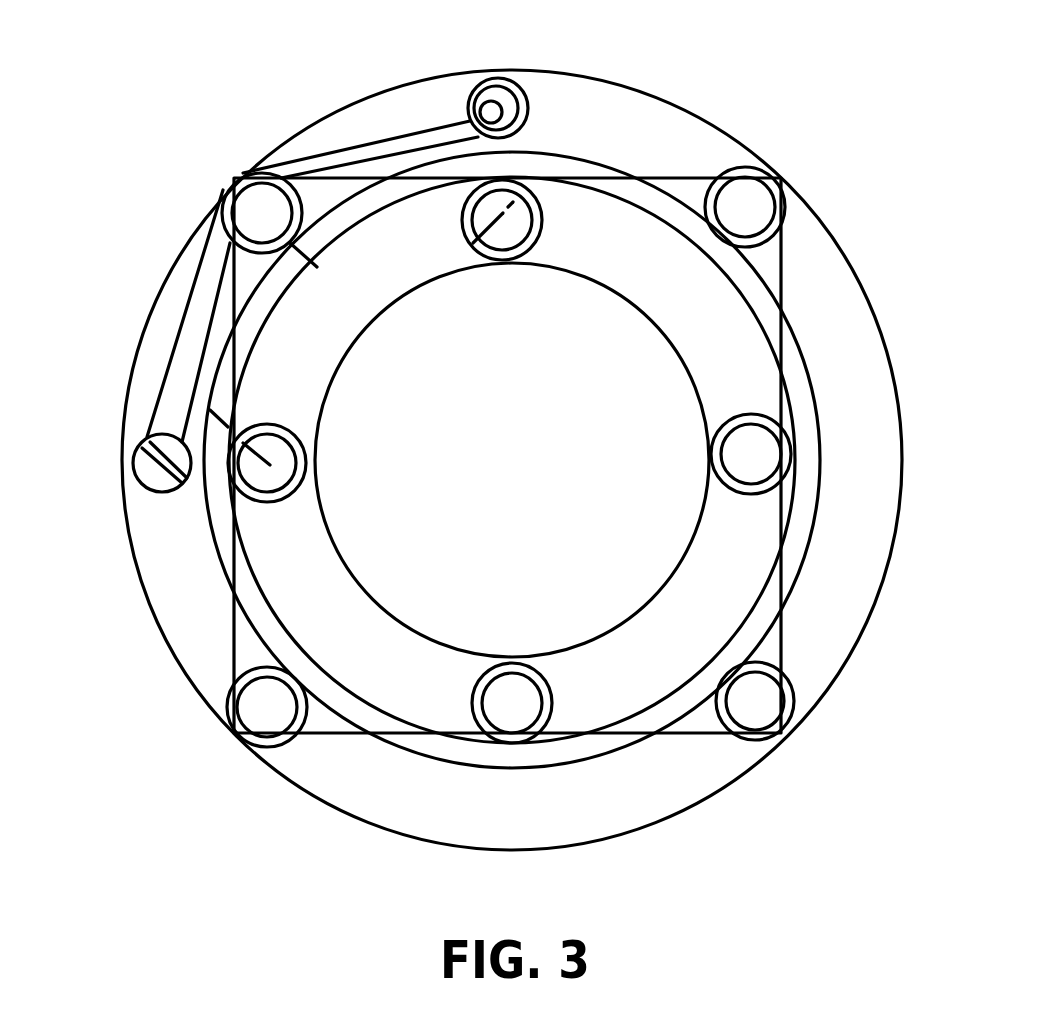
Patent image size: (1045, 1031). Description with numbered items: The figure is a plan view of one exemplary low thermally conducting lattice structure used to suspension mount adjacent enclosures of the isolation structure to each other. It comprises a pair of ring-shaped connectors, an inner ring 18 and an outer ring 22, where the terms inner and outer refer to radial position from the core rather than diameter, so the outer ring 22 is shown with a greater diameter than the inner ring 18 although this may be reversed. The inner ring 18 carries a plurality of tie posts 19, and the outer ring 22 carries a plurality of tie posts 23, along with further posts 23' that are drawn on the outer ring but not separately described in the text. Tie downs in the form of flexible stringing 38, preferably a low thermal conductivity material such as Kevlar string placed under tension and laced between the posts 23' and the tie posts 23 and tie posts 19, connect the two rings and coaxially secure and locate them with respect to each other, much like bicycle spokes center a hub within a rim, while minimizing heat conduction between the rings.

The outer ring 22 is at (690, 112).
The inner ring 18 is at (655, 335).
The flexible stringing 38 is at (180, 350).
The tie posts 23 is at (525, 478).
The tie posts 19 is at (502, 235).
The pivot bolts 23' is at (324, 275).